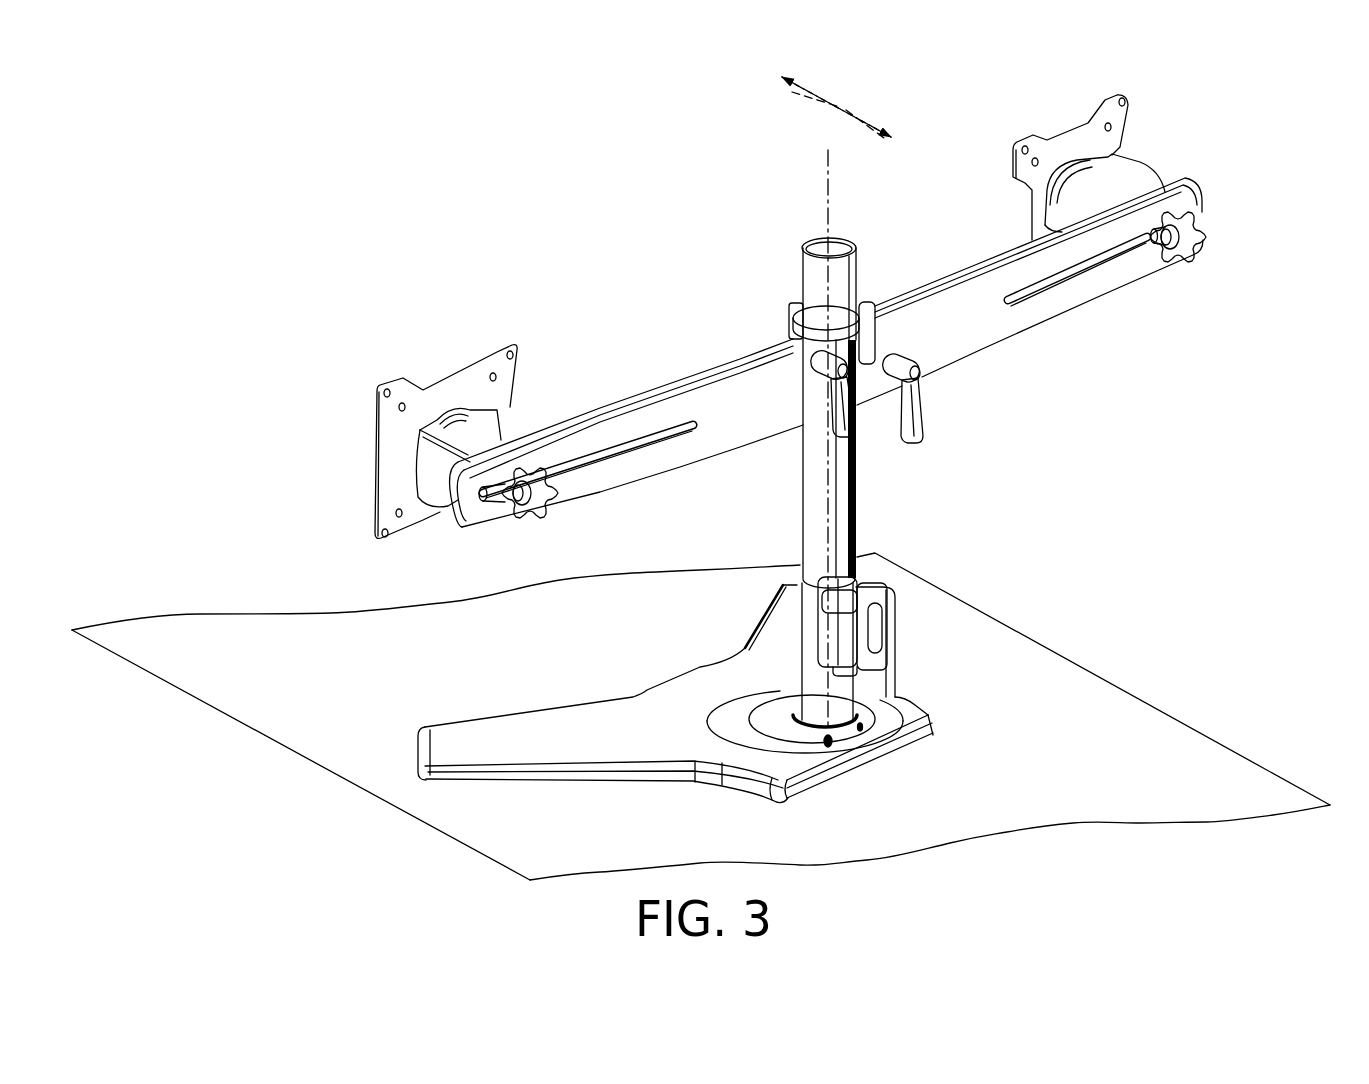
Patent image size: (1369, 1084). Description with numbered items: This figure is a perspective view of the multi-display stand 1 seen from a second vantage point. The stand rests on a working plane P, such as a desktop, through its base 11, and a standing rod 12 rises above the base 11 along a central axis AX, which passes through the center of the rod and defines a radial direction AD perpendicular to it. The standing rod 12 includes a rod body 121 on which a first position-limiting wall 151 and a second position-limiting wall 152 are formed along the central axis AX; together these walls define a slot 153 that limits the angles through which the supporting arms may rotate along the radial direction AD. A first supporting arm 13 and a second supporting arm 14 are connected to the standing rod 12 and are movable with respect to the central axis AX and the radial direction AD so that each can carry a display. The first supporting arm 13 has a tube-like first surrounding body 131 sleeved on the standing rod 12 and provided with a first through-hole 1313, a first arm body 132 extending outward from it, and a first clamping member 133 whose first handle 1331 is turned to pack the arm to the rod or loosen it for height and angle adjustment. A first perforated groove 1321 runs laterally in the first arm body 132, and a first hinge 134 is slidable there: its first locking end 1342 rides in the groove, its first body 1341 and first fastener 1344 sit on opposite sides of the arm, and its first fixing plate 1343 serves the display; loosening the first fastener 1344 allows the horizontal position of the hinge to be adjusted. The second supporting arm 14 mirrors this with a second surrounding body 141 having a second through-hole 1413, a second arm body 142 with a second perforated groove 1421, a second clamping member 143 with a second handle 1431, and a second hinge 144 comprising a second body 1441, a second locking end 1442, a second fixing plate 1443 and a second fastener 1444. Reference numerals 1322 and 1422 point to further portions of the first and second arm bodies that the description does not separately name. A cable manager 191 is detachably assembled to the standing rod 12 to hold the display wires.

The multi-display stand 1 is at (497, 192).
The base 11 is at (538, 795).
The standing rod 12 is at (836, 479).
The rod body 121 is at (804, 467).
The first supporting arm 13 is at (634, 309).
The first surrounding body 131 is at (772, 292).
The first through-hole 1313 is at (800, 343).
The first arm body 132 is at (626, 445).
The first perforated groove 1321 is at (593, 467).
The first arm bottom edge 1322 is at (680, 478).
The first clamping member 133 is at (787, 423).
The first handle 1331 is at (828, 406).
The first hinge 134 is at (471, 426).
The first body 1341 is at (440, 487).
The first locking end 1342 is at (495, 499).
The first fixing plate 1343 is at (400, 387).
The first fastener 1344 is at (541, 503).
The second supporting arm 14 is at (982, 138).
The second surrounding body 141 is at (911, 355).
The second through-hole 1413 is at (882, 345).
The second arm body 142 is at (1030, 284).
The second perforated groove 1421 is at (1058, 295).
The second arm top surface 1422 is at (1011, 246).
The second clamping member 143 is at (954, 410).
The second handle 1431 is at (925, 410).
The second hinge 144 is at (1125, 191).
The second body 1441 is at (1120, 163).
The second locking end 1442 is at (1144, 248).
The second fixing plate 1443 is at (1127, 97).
The second fastener 1444 is at (1192, 243).
The first position-limiting wall 151 is at (843, 522).
The second position-limiting wall 152 is at (856, 550).
The slot 153 is at (868, 627).
The cable manager 191 is at (852, 652).
The radial direction AD is at (850, 106).
The central axis AX is at (828, 182).
The working plane P is at (1135, 715).